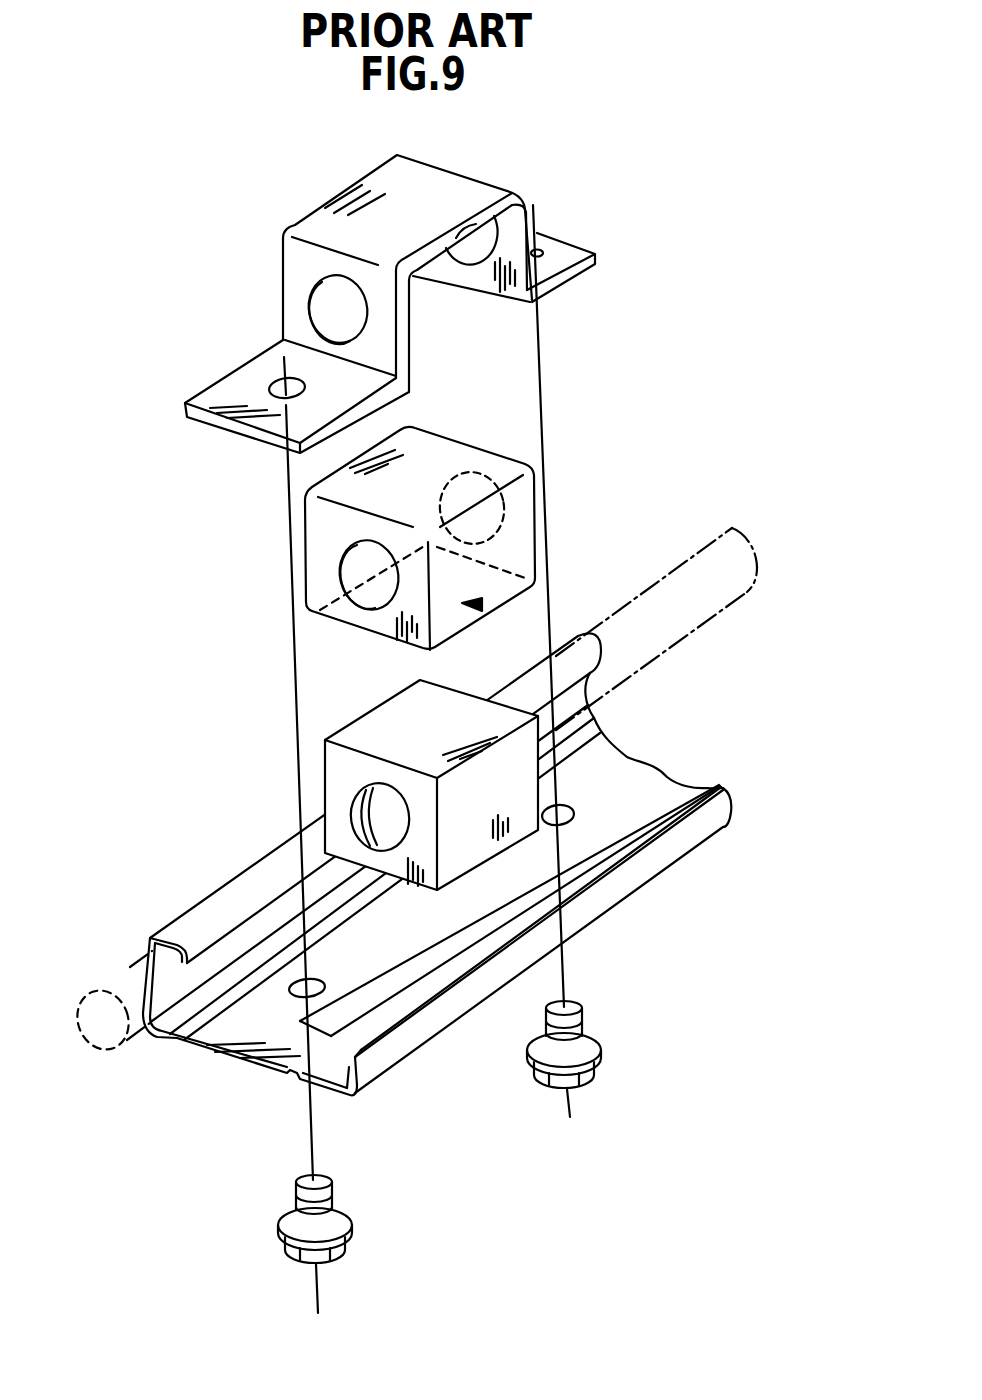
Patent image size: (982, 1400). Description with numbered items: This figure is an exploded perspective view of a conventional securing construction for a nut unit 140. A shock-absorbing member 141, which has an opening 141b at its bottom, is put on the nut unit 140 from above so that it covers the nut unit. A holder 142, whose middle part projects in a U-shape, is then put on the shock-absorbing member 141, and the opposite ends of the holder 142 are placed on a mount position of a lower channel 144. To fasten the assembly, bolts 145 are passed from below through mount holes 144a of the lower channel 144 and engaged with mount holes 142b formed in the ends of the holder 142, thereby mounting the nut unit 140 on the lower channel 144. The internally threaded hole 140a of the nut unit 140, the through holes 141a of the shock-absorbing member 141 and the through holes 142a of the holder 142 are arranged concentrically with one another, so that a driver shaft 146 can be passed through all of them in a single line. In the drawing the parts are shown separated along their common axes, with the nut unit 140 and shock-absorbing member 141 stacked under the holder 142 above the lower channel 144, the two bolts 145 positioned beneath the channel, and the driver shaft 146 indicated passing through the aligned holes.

The nut unit 140 is at (410, 727).
The internally threaded hole 140a is at (353, 818).
The shock-absorbing member 141 is at (450, 452).
The through holes 141a is at (345, 582).
The opening 141b is at (482, 606).
The holder 142 is at (430, 187).
The through holes 142a is at (309, 293).
The mount holes 142b is at (280, 388).
The lower channel 144 is at (450, 1013).
The mount holes 144a is at (566, 806).
The bolts 145 is at (605, 1048).
The driver shaft 146 is at (722, 610).